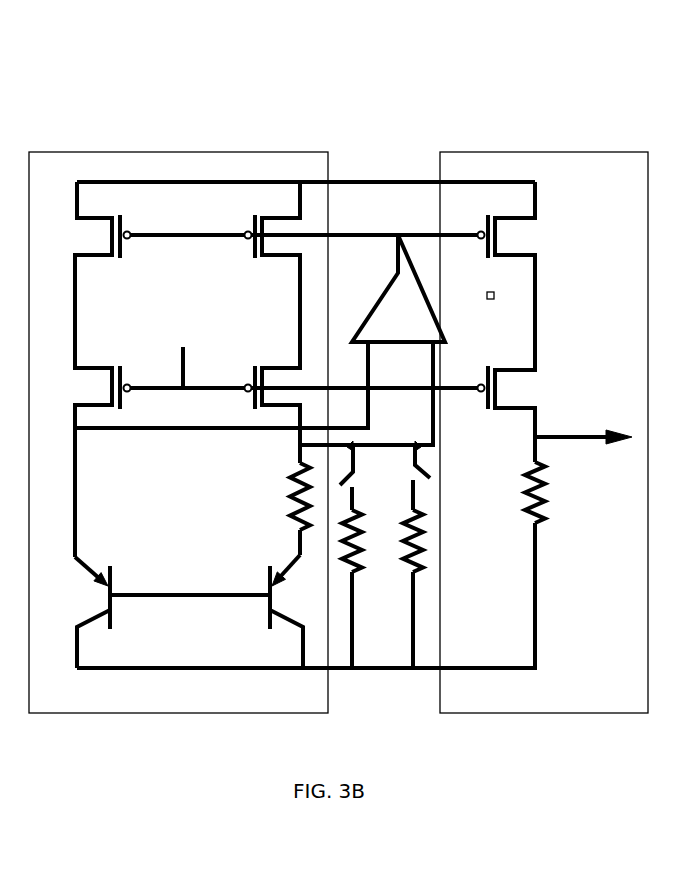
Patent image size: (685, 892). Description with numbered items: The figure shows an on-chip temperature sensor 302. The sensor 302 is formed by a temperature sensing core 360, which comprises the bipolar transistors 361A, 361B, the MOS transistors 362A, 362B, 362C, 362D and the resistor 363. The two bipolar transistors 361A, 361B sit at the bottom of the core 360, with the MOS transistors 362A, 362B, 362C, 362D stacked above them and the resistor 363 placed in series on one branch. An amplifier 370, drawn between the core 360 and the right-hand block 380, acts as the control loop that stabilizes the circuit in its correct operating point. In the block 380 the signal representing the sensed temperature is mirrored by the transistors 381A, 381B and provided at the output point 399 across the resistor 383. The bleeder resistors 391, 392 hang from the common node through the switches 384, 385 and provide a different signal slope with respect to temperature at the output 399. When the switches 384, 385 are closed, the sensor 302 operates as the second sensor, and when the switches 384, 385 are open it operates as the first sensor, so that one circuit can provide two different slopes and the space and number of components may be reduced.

The sensor 302 is at (312, 92).
The temperature sensing core 360 is at (178, 432).
The second circuit block 380 is at (544, 432).
The amplifier 370 is at (398, 288).
The MOS transistor 362A is at (90, 360).
The MOS transistor 362B is at (270, 360).
The MOS transistor 362C is at (92, 257).
The MOS transistor 362D is at (265, 257).
The transistor 381A is at (518, 240).
The transistor 381B is at (515, 395).
The bipolar transistor 361A is at (117, 583).
The bipolar transistor 361B is at (265, 583).
The resistor 363 is at (290, 493).
The resistor 383 is at (522, 495).
The switch 384 is at (395, 478).
The switch 385 is at (428, 486).
The bleeder resistor 391 is at (400, 563).
The bleeder resistor 392 is at (363, 553).
The output point 399 is at (592, 442).